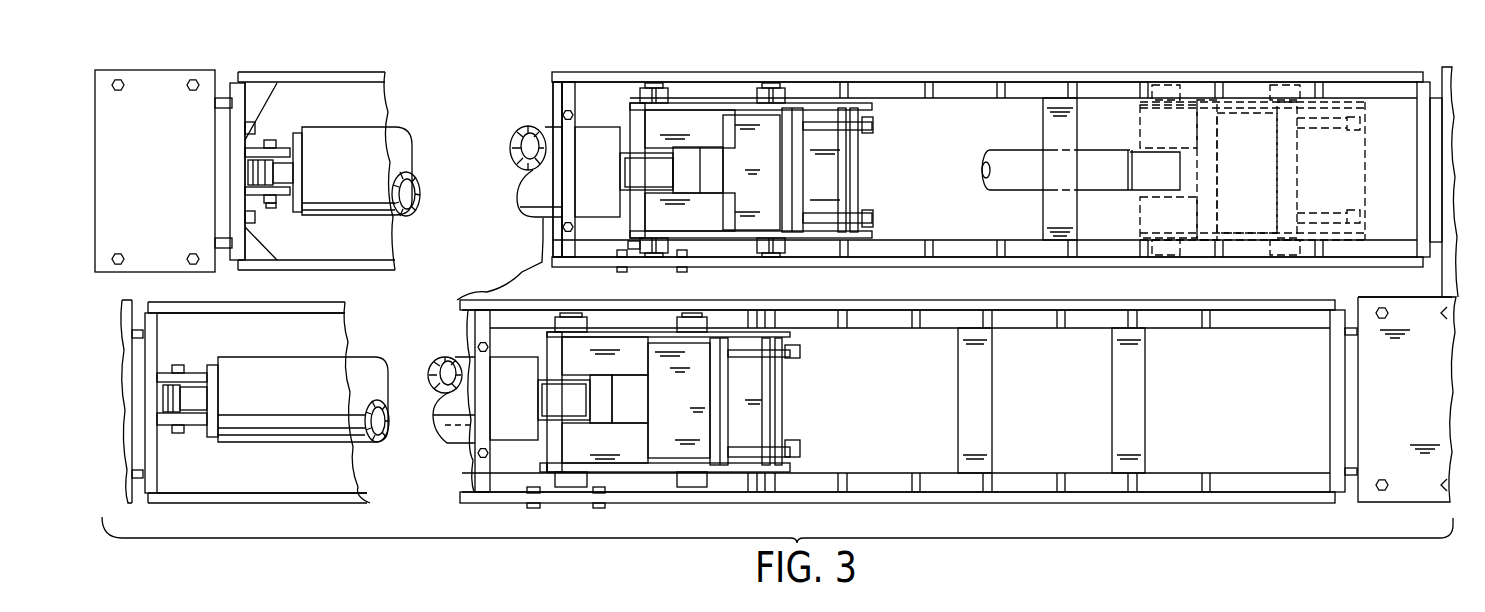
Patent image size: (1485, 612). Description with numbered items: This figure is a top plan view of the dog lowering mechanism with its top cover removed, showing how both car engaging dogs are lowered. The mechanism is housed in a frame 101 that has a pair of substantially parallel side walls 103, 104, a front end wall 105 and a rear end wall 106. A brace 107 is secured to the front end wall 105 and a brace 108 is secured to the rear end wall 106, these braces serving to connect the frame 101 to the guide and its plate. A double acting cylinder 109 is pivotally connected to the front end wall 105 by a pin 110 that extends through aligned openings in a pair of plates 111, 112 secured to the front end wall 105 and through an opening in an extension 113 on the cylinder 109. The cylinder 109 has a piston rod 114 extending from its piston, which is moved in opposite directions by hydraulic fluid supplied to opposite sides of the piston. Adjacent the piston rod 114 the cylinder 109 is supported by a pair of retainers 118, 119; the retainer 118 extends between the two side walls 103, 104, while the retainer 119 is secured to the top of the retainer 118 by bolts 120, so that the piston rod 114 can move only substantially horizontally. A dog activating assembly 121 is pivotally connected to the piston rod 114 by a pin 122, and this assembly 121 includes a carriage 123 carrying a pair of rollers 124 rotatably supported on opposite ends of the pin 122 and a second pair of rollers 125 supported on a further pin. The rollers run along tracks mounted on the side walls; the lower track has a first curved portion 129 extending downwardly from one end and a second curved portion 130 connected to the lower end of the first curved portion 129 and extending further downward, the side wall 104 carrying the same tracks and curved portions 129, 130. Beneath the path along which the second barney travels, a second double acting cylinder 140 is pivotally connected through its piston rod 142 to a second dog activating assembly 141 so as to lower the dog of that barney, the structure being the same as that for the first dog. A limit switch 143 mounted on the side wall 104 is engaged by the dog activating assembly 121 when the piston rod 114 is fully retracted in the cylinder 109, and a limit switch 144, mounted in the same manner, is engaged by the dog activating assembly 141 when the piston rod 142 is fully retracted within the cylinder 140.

The frame 101 is at (1025, 72).
The side wall 103 is at (1233, 72).
The side wall 104 is at (1282, 263).
The front end wall 105 is at (260, 130).
The rear end wall 106 is at (1423, 143).
The brace 107 is at (145, 70).
The brace 108 is at (1443, 67).
The double acting cylinder 109 is at (545, 127).
The pin 110 is at (271, 203).
The plate 111 is at (288, 190).
The plate 112 is at (290, 150).
The extension 113 is at (248, 174).
The piston rod 114 is at (640, 167).
The retainer 118 is at (565, 246).
The retainer 119 is at (570, 193).
The bolts 120 is at (562, 230).
The dog activating assembly 121 is at (743, 238).
The pin 122 is at (652, 83).
The carriage 123 is at (691, 98).
The rollers 124 is at (645, 97).
The rollers 125 is at (772, 85).
The first curved portion 129 is at (841, 90).
The second curved portion 130 is at (813, 92).
The double acting cylinder 140 is at (298, 415).
The dog activating assembly 141 is at (658, 472).
The piston rod 142 is at (565, 398).
The limit switch 143 is at (672, 250).
The limit switch 144 is at (552, 487).